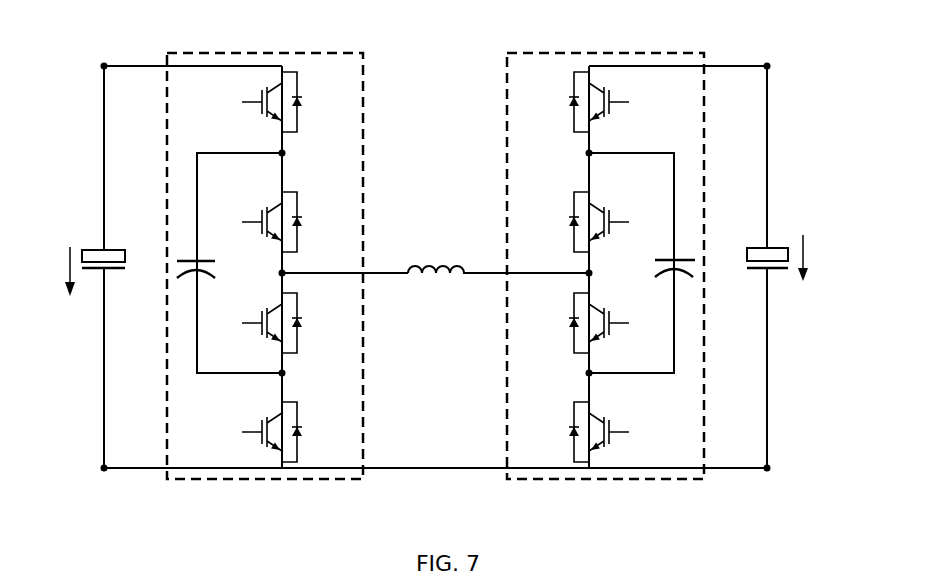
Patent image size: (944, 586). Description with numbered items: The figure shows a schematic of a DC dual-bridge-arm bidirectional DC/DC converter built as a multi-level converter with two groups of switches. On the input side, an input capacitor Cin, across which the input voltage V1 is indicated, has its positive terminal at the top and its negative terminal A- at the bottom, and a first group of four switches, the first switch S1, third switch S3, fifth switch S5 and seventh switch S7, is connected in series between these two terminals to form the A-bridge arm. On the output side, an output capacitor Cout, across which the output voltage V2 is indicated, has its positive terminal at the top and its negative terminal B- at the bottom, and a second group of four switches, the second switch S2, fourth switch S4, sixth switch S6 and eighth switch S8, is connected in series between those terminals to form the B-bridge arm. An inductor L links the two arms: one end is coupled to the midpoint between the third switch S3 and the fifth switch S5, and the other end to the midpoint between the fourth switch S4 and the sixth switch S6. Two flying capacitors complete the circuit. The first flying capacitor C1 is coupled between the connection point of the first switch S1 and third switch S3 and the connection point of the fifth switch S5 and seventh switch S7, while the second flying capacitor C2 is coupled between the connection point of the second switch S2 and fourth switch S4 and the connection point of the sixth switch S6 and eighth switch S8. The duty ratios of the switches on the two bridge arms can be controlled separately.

The negative terminal of the input capacitor A- is at (61, 468).
The negative terminal of the output capacitor B- is at (810, 468).
The input capacitor Cin is at (109, 241).
The output capacitor Cout is at (751, 278).
The input voltage V1 is at (67, 255).
The output voltage V2 is at (802, 242).
The first flying capacitor C1 is at (229, 263).
The second flying capacitor C2 is at (642, 263).
The inductor L is at (435, 251).
The first switch S1 is at (292, 102).
The second switch S2 is at (578, 102).
The third switch S3 is at (292, 222).
The fourth switch S4 is at (578, 222).
The fifth switch S5 is at (292, 323).
The sixth switch S6 is at (578, 323).
The seventh switch S7 is at (292, 432).
The eighth switch S8 is at (578, 432).